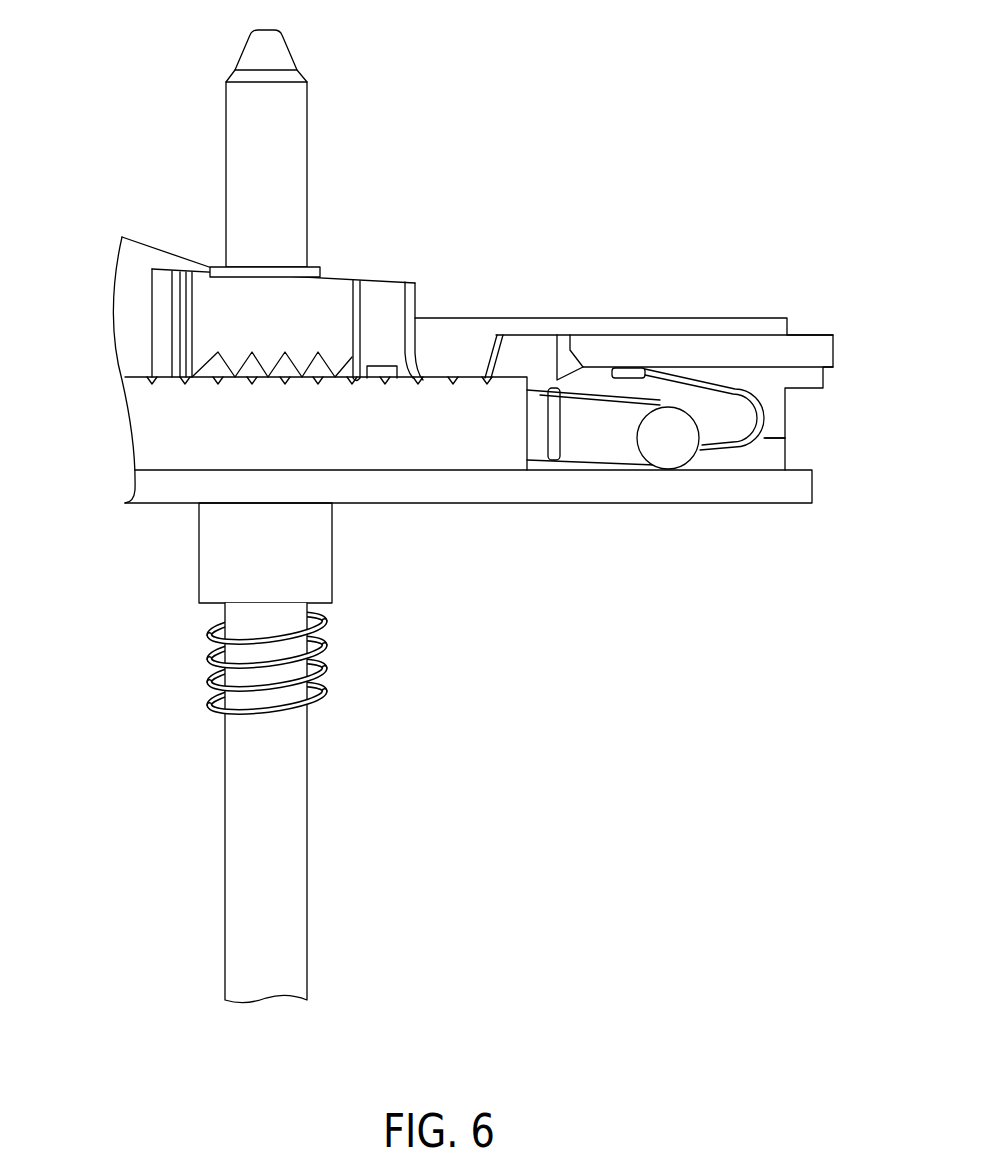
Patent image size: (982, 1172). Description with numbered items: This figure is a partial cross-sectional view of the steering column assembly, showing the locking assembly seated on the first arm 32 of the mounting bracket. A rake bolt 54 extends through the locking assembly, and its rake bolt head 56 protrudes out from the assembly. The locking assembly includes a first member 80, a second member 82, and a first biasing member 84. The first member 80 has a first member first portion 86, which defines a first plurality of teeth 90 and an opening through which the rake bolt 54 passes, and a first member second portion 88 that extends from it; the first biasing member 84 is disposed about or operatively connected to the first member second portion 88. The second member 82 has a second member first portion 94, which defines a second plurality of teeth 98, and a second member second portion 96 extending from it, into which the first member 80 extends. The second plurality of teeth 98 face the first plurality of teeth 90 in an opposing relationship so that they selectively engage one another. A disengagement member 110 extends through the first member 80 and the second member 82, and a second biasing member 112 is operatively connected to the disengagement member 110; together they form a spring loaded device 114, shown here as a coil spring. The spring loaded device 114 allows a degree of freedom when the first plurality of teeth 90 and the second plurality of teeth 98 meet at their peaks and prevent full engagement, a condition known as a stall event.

The first arm 32 is at (140, 492).
The rake bolt 54 is at (298, 125).
The rake bolt head 56 is at (283, 55).
The first member 80 is at (360, 258).
The second member 82 is at (106, 410).
The first biasing member 84 is at (755, 407).
The first member first portion 86 is at (396, 296).
The first member second portion 88 is at (617, 433).
The first plurality of teeth 90 is at (197, 368).
The second member first portion 94 is at (142, 453).
The second member second portion 96 is at (622, 343).
The second plurality of teeth 98 is at (192, 378).
The disengagement member 110 is at (333, 550).
The second biasing member 112 is at (322, 618).
The spring loaded device 114 is at (178, 626).